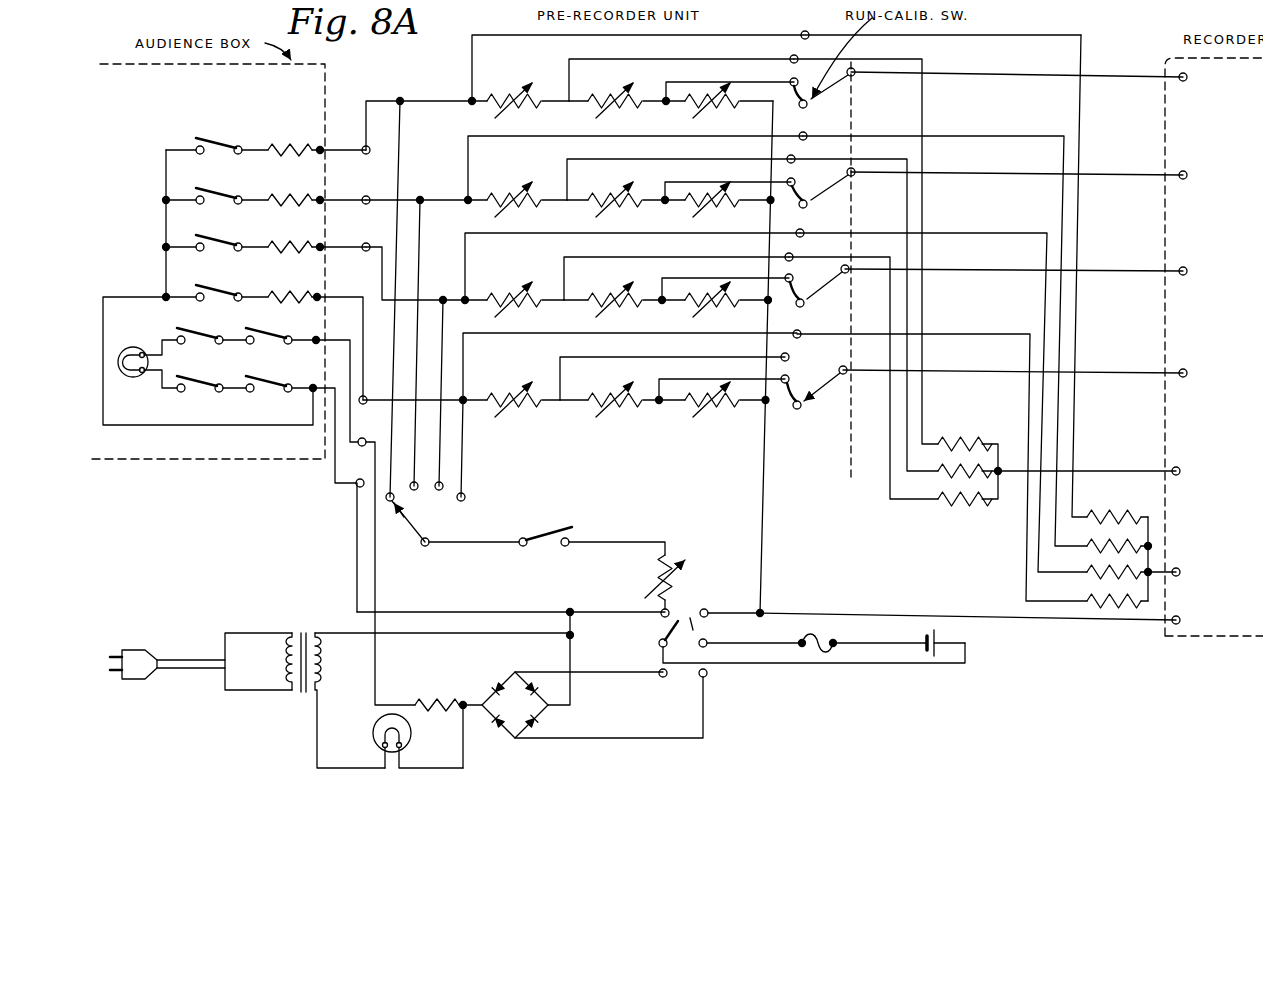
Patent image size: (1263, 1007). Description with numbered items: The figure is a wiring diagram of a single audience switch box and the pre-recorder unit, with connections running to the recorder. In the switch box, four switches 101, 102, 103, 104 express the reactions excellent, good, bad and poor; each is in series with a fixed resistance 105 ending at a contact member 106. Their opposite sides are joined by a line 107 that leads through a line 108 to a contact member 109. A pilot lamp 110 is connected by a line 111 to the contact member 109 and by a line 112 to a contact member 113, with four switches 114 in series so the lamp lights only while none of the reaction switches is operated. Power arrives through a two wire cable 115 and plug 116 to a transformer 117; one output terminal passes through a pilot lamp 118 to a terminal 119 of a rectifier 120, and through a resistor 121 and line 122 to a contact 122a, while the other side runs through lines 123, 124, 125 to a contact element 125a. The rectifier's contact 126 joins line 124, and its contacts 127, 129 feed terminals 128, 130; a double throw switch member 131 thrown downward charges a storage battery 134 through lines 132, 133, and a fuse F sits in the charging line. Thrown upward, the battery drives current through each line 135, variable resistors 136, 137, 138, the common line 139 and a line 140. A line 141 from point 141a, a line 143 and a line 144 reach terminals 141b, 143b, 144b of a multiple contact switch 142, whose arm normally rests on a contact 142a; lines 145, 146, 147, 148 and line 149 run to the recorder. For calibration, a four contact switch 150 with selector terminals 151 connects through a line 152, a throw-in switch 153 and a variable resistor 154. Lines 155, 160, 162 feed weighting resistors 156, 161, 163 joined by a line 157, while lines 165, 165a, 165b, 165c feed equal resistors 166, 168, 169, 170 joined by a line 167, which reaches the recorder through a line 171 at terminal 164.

The switch 101 is at (232, 146).
The switch 102 is at (229, 196).
The switch 103 is at (229, 244).
The switch 104 is at (229, 294).
The fixed resistance 105 is at (290, 196).
The contact member 106 is at (322, 153).
The line 107 is at (162, 226).
The line 108 is at (122, 296).
The contact member 109 is at (313, 386).
The pilot lamp 110 is at (138, 342).
The line 111 is at (248, 392).
The line 112 is at (236, 336).
The contact member 113 is at (314, 336).
The switch 114 is at (208, 386).
The two wire cable 115 is at (200, 652).
The plug 116 is at (135, 648).
The transformer 117 is at (313, 630).
The pilot lamp 118 is at (373, 736).
The terminal 119 is at (480, 700).
The rectifier 120 is at (545, 721).
The resistor 121 is at (432, 699).
The line 122 is at (373, 568).
The contact 122a is at (356, 443).
The line 123 is at (410, 638).
The line 124 is at (574, 660).
The line 125 is at (560, 600).
The contact element 125a is at (355, 487).
The contact 126 is at (551, 707).
The contact 127 is at (520, 666).
The terminal 128 is at (660, 672).
The contact 129 is at (514, 742).
The terminal 130 is at (706, 676).
The double throw switch member 131 is at (708, 640).
The line 132 is at (916, 666).
The line 133 is at (898, 642).
The storage battery 134 is at (948, 627).
The line 135 is at (432, 96).
The variable resistor 136 is at (514, 96).
The variable resistor 137 is at (609, 96).
The variable resistor 138 is at (694, 112).
The line 139 is at (768, 535).
The line 140 is at (730, 600).
The line 141 is at (555, 38).
The point 141a is at (460, 108).
The terminal 141b is at (801, 38).
The multiple contact switch 142 is at (857, 87).
The contact 142a is at (806, 107).
The line 143 is at (698, 60).
The terminal 143b is at (792, 62).
The line 144 is at (712, 86).
The terminal 144b is at (772, 226).
The line 145 is at (1132, 68).
The line 146 is at (1132, 170).
The line 147 is at (1127, 270).
The line 148 is at (1127, 372).
The line 149 is at (1104, 622).
The four contact switch 150 is at (412, 523).
The selector terminals 151 is at (465, 455).
The line 152 is at (485, 545).
The throw-in switch 153 is at (565, 522).
The variable resistor 154 is at (655, 572).
The line 155 is at (930, 215).
The resistor 156 is at (955, 438).
The line 157 is at (1000, 460).
The line 160 is at (914, 312).
The resistor 161 is at (944, 474).
The line 162 is at (888, 456).
The resistor 163 is at (956, 506).
The recorder terminal 164 is at (1108, 468).
The line 165 is at (1087, 312).
The line 165a is at (1050, 211).
The line 165b is at (1050, 312).
The line 165c is at (1024, 355).
The resistor 166 is at (1125, 505).
The line 167 is at (1151, 531).
The resistor 168 is at (1106, 546).
The resistor 169 is at (1135, 579).
The resistor 170 is at (1095, 600).
The line 171 is at (1178, 568).
The fuse F is at (825, 637).